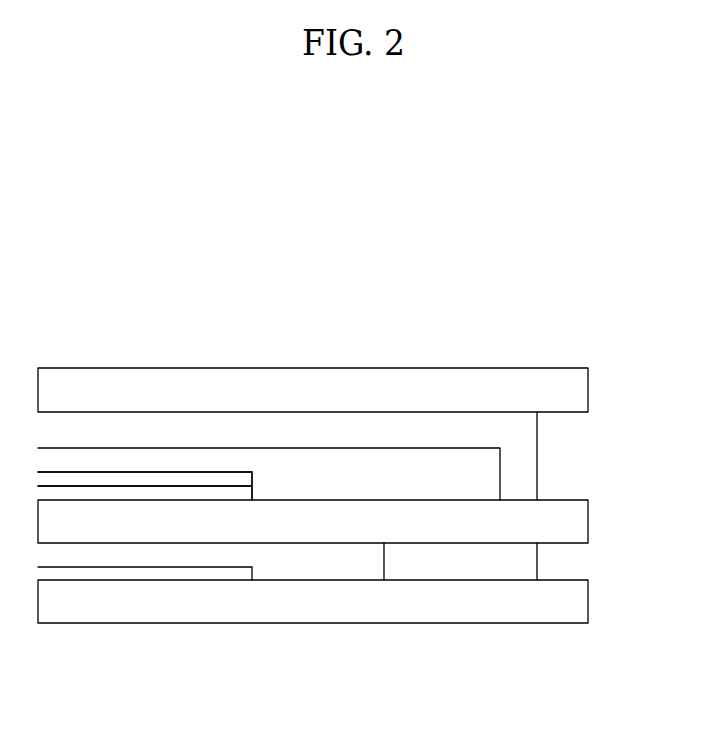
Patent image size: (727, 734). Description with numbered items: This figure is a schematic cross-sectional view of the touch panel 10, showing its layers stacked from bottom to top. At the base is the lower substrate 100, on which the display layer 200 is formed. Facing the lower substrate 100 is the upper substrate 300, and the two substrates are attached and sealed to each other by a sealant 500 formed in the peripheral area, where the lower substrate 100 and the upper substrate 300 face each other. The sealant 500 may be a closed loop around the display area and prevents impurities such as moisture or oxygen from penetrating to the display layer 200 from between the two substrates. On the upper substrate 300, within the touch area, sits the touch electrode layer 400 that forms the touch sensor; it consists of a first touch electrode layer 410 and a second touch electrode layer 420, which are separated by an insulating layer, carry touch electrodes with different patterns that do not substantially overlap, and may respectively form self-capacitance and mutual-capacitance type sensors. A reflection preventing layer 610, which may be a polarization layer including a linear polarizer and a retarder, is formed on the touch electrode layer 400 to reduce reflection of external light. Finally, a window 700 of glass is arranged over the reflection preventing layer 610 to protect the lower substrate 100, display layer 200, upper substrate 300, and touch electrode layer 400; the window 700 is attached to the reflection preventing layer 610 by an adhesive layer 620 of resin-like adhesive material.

The touch panel 10 is at (308, 244).
The lower substrate 100 is at (588, 605).
The display layer 200 is at (205, 570).
The upper substrate 300 is at (588, 525).
The touch electrode layer 400 is at (188, 301).
The first touch electrode layer 410 is at (103, 493).
The second touch electrode layer 420 is at (163, 477).
The sealant 500 is at (500, 568).
The reflection preventing layer 610 is at (325, 488).
The adhesive layer 620 is at (473, 428).
The window 700 is at (588, 392).